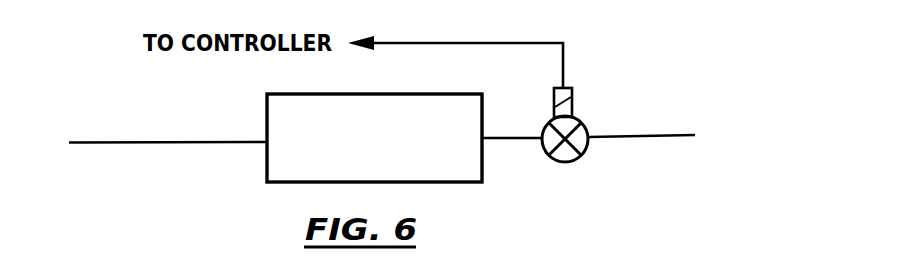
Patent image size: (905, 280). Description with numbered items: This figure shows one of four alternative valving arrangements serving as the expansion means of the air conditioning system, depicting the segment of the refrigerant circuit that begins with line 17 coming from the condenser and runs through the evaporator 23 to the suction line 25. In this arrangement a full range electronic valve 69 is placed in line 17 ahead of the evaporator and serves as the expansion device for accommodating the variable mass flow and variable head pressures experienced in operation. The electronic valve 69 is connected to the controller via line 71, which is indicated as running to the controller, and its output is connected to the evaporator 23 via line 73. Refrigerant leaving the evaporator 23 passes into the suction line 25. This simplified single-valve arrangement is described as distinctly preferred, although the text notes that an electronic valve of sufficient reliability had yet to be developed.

The line 17 is at (664, 136).
The evaporator 23 is at (267, 176).
The suction line 25 is at (120, 143).
The full range electronic valve 69 is at (583, 121).
The line 71 is at (441, 43).
The line 73 is at (521, 138).